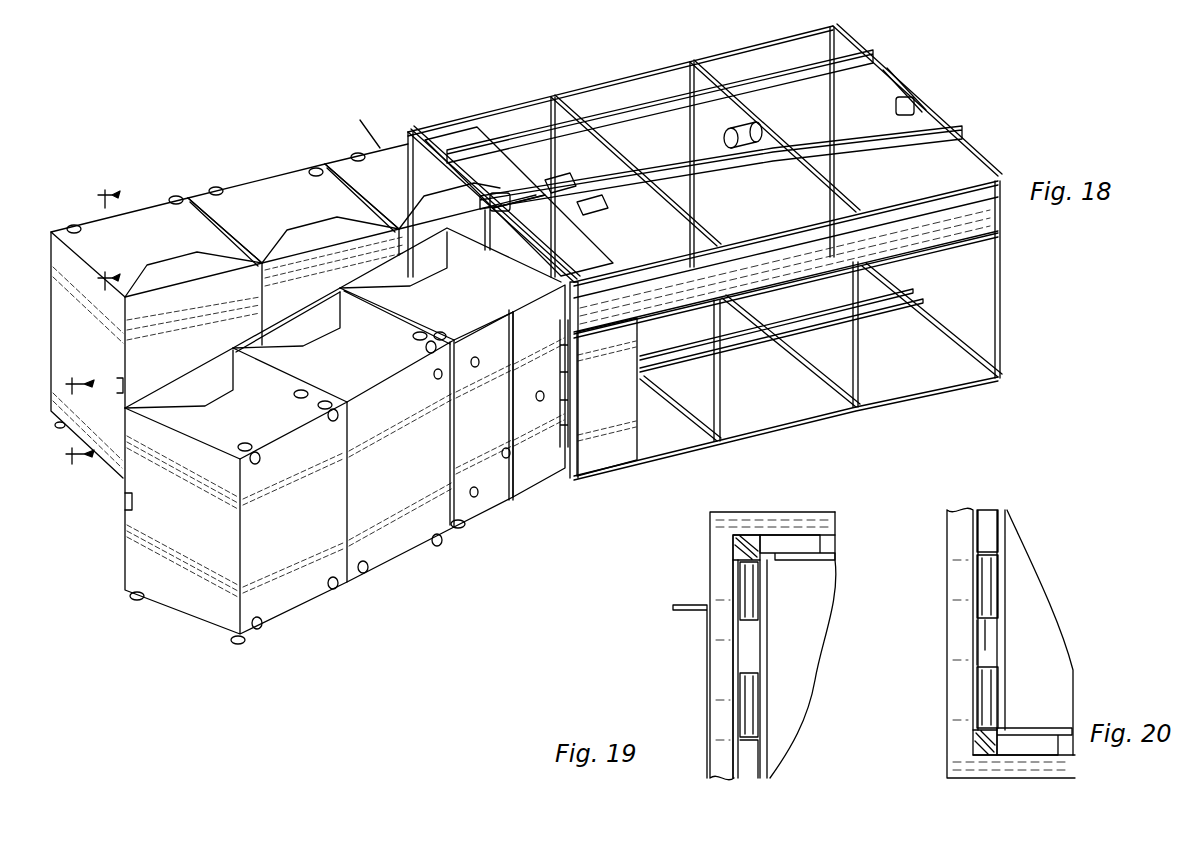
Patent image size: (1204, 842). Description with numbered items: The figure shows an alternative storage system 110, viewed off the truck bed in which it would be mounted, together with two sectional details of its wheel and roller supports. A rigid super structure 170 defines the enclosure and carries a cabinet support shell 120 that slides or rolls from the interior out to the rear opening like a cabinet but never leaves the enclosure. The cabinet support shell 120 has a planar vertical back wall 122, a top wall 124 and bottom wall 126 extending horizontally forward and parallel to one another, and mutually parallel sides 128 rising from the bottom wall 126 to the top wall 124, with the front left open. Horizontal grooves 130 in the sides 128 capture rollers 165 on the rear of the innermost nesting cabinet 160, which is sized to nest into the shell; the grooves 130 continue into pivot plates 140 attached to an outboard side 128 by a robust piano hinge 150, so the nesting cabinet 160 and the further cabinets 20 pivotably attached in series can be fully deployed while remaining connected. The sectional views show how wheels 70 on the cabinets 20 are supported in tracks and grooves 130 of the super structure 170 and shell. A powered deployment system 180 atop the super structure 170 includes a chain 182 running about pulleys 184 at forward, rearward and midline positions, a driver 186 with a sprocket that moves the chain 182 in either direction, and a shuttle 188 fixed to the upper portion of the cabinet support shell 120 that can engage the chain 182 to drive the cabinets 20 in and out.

In FIG. 18, the alternative storage system 110 is at (1010, 102).
In FIG. 18, the cabinet support shell 120 is at (420, 132).
In FIG. 18, the back wall 122 is at (646, 412).
In FIG. 18, the top wall 124 is at (520, 190).
In FIG. 18, the bottom wall 126 is at (582, 480).
In FIG. 18, the sides 128 is at (624, 396).
In FIG. 18, the grooves 130 is at (497, 267).
In FIG. 19, the grooves 130 is at (742, 745).
In FIG. 20, the grooves 130 is at (980, 645).
In FIG. 18, the pivot plates 140 is at (553, 399).
In FIG. 18, the piano hinge 150 is at (560, 450).
In FIG. 18, the nesting cabinet 160 is at (384, 148).
In FIG. 18, the rollers 165 is at (358, 154).
In FIG. 19, the rollers 165 is at (746, 702).
In FIG. 20, the rollers 165 is at (982, 584).
In FIG. 18, the super structure 170 is at (180, 196).
In FIG. 19, the super structure 170 is at (712, 540).
In FIG. 20, the super structure 170 is at (946, 745).
In FIG. 18, the deployment system 180 is at (786, 112).
In FIG. 18, the chain 182 is at (900, 68).
In FIG. 18, the pulleys 184 is at (916, 100).
In FIG. 18, the driver 186 is at (732, 128).
In FIG. 18, the shuttle 188 is at (572, 182).
In FIG. 18, the cabinets 20 is at (408, 574).
In FIG. 19, the cabinets 20 is at (814, 616).
In FIG. 20, the cabinets 20 is at (1039, 668).
In FIG. 19, the wheels 70 is at (794, 545).
In FIG. 20, the wheels 70 is at (978, 700).